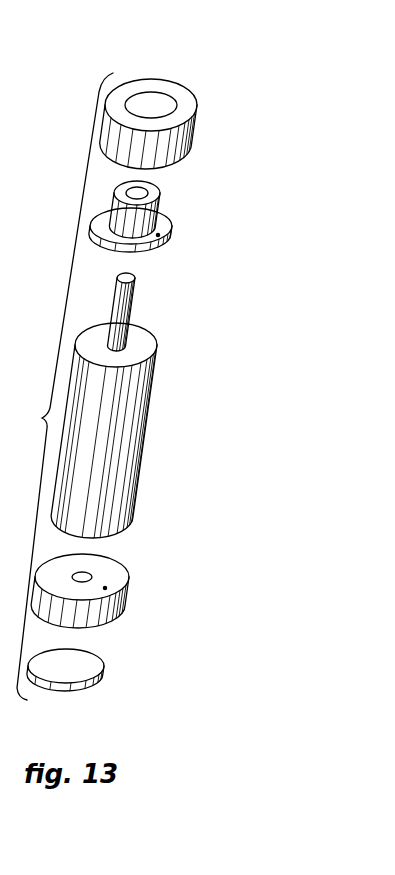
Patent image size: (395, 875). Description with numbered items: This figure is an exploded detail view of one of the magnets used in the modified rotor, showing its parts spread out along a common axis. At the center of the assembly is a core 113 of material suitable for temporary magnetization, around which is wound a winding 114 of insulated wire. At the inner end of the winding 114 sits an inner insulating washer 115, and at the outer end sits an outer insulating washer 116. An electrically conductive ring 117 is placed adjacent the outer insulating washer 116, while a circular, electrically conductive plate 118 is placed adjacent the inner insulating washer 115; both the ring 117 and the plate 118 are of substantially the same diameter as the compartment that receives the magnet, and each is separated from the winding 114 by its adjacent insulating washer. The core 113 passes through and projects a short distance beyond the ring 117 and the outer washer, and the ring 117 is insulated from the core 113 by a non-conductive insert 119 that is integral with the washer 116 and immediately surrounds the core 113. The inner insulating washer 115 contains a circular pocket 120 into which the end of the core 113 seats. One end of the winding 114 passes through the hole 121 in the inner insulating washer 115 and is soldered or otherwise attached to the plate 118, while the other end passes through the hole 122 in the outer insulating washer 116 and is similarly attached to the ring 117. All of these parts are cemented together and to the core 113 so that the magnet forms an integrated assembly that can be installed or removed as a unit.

The core 113 is at (130, 312).
The winding 114 is at (137, 462).
The inner insulating washer 115 is at (125, 608).
The outer insulating washer 116 is at (165, 247).
The electrically conductive ring 117 is at (197, 132).
The circular electrically conductive plate 118 is at (93, 675).
The non-conductive insert 119 is at (160, 208).
The circular pocket 120 is at (92, 573).
The hole 121 is at (105, 588).
The hole 122 is at (158, 235).